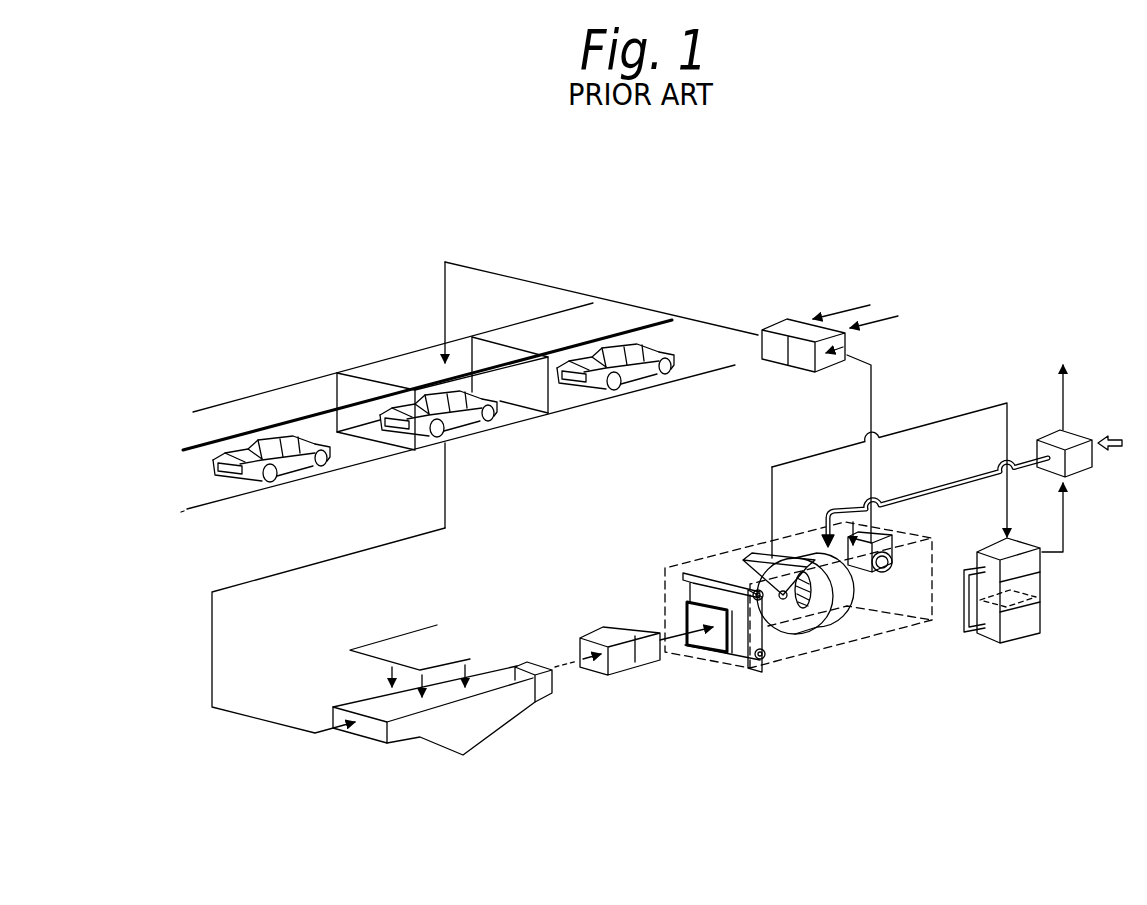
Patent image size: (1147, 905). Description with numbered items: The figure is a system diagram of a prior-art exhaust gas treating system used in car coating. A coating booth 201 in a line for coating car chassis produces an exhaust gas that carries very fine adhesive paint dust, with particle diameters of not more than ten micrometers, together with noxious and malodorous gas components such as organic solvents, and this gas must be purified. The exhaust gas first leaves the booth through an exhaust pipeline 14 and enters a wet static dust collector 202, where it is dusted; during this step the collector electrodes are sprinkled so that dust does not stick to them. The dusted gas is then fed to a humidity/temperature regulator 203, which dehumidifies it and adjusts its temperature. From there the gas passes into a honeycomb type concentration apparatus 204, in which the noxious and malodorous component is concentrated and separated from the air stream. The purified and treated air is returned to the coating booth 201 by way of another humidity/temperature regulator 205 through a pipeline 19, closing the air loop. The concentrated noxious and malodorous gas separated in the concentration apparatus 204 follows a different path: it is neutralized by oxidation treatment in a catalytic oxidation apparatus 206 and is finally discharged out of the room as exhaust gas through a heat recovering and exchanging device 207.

The exhaust pipeline 14 is at (212, 645).
The pipeline 19 is at (700, 318).
The coating booth 201 is at (398, 365).
The wet static dust collector 202 is at (451, 745).
The humidity/temperature regulator 203 is at (627, 663).
The honeycomb type concentration apparatus 204 is at (812, 655).
The humidity/temperature regulator 205 is at (843, 347).
The catalytic oxidation apparatus 206 is at (1012, 638).
The heat recovering and exchanging device 207 is at (1083, 467).